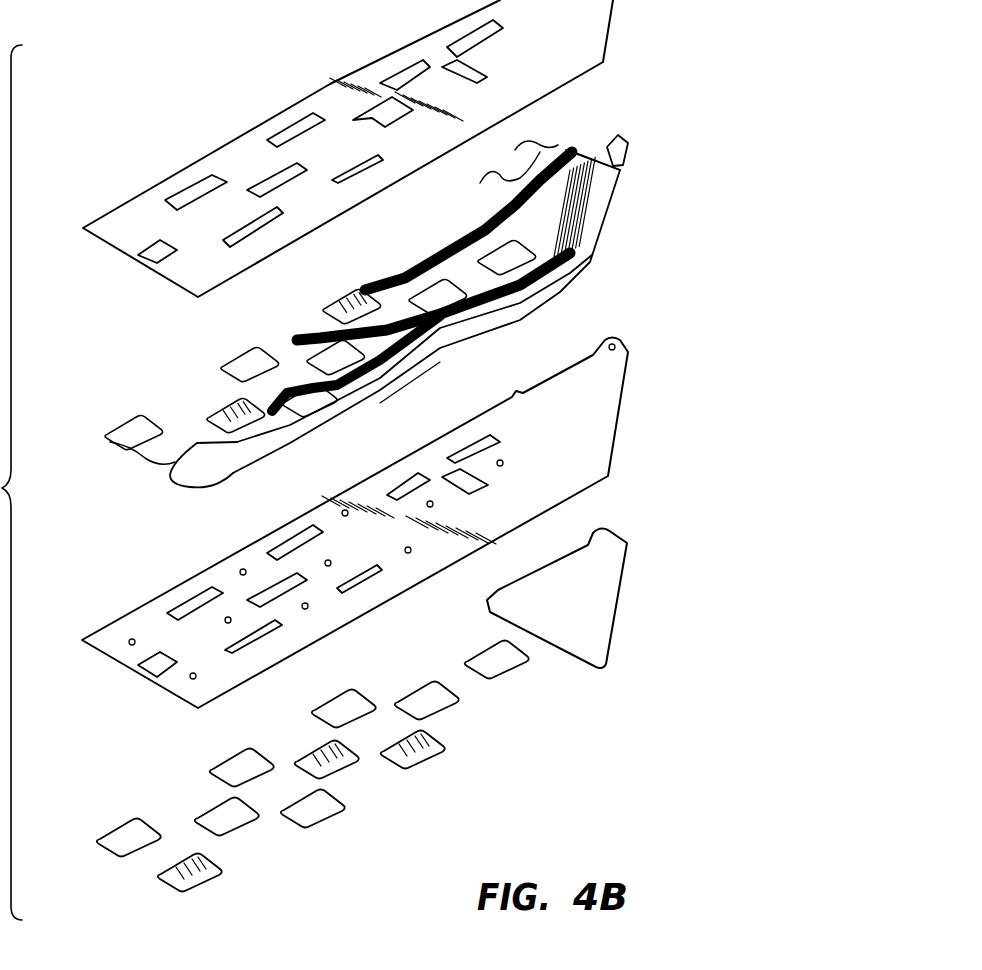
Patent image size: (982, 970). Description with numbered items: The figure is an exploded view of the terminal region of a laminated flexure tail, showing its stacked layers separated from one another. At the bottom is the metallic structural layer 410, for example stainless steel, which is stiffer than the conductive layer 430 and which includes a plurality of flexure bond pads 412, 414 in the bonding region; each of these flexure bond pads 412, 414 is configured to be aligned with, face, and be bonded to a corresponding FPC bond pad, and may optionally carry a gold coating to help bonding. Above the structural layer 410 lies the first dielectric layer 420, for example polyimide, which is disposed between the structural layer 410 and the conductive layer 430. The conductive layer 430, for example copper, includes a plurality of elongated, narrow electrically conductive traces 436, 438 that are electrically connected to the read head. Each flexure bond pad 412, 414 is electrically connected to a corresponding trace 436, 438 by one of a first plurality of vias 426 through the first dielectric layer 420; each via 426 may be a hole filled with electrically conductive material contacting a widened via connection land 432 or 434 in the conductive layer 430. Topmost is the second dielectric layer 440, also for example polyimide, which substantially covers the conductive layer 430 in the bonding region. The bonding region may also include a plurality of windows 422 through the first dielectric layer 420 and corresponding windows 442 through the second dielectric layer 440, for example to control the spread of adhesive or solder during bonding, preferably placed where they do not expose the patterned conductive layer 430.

The structural layer 410 is at (610, 595).
The flexure bond pad 412 is at (517, 673).
The flexure bond pad 414 is at (420, 752).
The first dielectric layer 420 is at (595, 413).
The window 422 is at (433, 443).
The via 426 is at (433, 507).
The conductive layer 430 is at (600, 225).
The via connection land 432 is at (513, 323).
The via connection land 434 is at (417, 340).
The electrically conductive trace 436 is at (490, 170).
The electrically conductive trace 438 is at (562, 152).
The second dielectric layer 440 is at (628, 2).
The window 442 is at (347, 167).